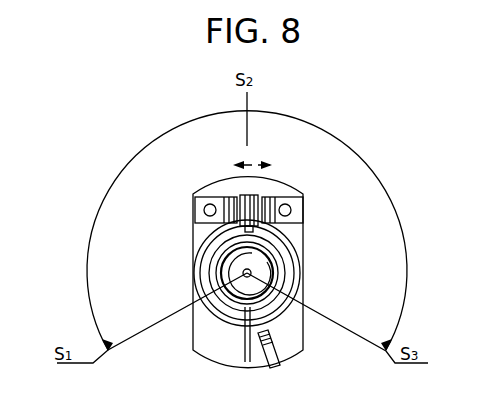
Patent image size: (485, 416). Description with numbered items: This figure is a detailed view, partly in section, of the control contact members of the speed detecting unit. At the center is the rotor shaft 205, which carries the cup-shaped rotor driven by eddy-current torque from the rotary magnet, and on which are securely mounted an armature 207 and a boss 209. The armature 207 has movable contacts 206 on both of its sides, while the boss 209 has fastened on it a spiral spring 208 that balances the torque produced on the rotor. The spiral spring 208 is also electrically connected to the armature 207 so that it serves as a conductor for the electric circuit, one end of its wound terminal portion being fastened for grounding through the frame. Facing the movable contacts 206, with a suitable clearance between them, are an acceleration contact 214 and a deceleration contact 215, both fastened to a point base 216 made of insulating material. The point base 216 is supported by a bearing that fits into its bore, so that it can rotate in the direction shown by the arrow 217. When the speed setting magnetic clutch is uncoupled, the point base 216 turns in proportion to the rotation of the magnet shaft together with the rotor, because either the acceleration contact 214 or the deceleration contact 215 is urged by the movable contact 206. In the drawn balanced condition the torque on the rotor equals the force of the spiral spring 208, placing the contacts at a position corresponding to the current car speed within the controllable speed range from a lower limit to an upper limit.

The rotor shaft 205 is at (243, 273).
The movable contacts 206 is at (255, 195).
The armature 207 is at (300, 238).
The spiral spring 208 is at (212, 330).
The boss 209 is at (243, 270).
The acceleration contact 214 is at (215, 203).
The deceleration contact 215 is at (300, 206).
The point base 216 is at (292, 342).
The arrow 217 is at (250, 164).